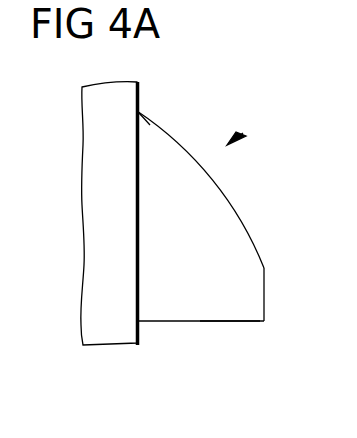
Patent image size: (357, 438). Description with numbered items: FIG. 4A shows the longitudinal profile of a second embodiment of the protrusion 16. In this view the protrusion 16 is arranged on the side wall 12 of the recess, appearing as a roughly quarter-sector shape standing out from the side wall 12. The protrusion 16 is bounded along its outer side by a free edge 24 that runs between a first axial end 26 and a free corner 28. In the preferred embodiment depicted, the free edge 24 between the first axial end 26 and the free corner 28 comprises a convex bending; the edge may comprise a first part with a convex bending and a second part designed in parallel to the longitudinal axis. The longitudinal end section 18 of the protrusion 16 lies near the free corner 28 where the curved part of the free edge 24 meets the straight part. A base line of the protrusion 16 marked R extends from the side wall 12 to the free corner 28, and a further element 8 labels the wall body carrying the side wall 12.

The component wall 8 is at (88, 141).
The side wall 12 is at (139, 328).
The protrusion 16 is at (243, 133).
The longitudinal end section 18 is at (233, 252).
The free edge 24 is at (237, 211).
The first axial end 26 is at (141, 112).
The free corner 28 is at (266, 321).
The radius R is at (225, 322).